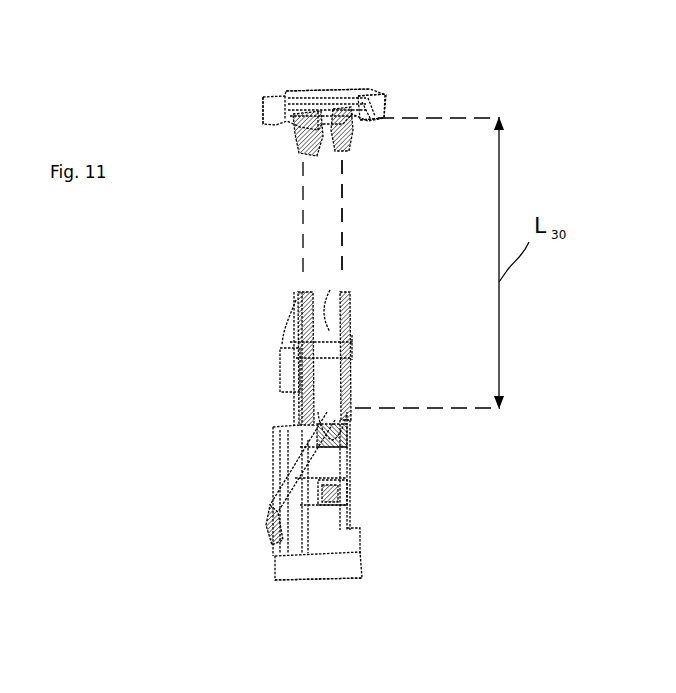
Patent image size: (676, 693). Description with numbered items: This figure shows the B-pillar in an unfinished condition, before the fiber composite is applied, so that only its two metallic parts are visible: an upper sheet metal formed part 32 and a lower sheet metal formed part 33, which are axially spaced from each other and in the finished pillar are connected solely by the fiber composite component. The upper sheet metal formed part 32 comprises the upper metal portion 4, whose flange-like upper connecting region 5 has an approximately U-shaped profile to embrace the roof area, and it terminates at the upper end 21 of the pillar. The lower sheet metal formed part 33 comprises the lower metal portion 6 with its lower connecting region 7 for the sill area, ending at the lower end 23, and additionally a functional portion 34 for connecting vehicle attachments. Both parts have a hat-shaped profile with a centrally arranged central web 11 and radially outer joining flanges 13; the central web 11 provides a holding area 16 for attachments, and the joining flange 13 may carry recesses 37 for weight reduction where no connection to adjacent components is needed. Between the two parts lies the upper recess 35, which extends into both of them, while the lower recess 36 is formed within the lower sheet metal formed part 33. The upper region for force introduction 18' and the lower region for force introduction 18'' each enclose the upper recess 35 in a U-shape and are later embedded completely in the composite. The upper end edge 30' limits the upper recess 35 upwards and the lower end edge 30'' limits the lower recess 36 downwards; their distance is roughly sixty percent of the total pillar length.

The upper metal portion 4 is at (258, 126).
The upper connecting region 5 is at (265, 107).
The lower metal portion 6 is at (257, 538).
The lower connecting region 7 is at (357, 568).
The central web 11 is at (310, 150).
The joining flange 13 is at (300, 133).
The holding area 16 is at (322, 350).
The upper region for force introduction 18' is at (346, 69).
The lower region for force introduction 18'' is at (394, 411).
The upper end 21 is at (312, 92).
The lower end 23 is at (328, 582).
The upper end edge 30' is at (384, 86).
The lower end edge 30'' is at (263, 484).
The upper sheet metal formed part 32 is at (378, 111).
The lower sheet metal formed part 33 is at (350, 463).
The functional portion 34 is at (360, 343).
The upper recess 35 is at (328, 236).
The lower recess 36 is at (312, 386).
The recesses 37 is at (345, 328).